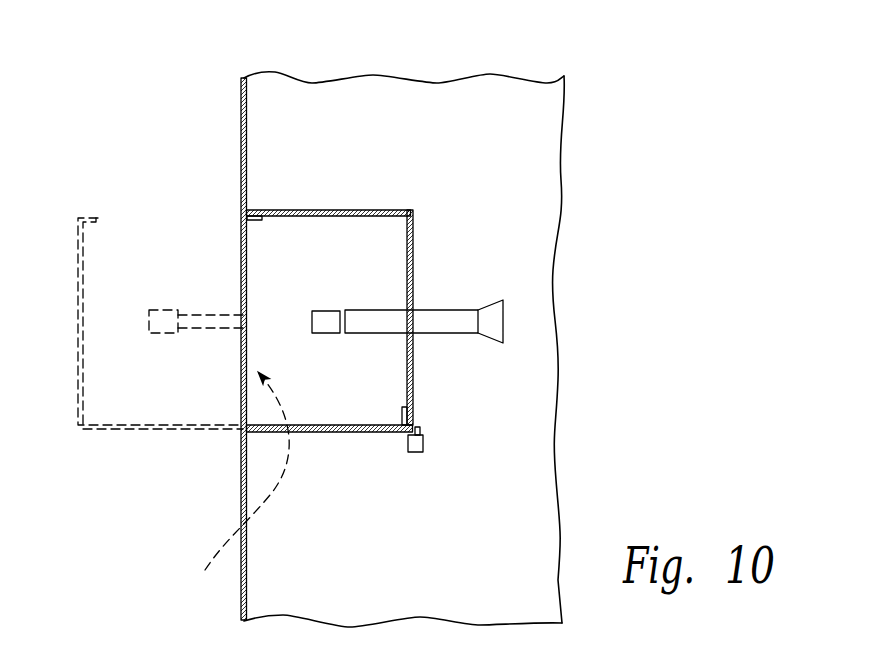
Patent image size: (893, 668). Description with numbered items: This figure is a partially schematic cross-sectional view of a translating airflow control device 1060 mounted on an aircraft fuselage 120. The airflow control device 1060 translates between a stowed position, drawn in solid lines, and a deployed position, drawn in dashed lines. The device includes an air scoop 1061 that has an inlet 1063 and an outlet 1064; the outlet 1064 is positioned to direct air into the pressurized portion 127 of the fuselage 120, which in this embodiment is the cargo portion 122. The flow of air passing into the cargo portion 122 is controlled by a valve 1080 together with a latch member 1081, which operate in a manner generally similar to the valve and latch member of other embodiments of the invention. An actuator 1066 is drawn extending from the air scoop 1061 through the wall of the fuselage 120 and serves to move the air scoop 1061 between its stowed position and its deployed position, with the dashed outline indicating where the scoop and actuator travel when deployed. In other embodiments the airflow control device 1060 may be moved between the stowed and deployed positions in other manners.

The aircraft fuselage 120 is at (241, 105).
The cargo portion 122 is at (545, 208).
The pressurized portion 127 is at (564, 127).
The airflow control device 1060 is at (205, 440).
The air scoop 1061 is at (243, 272).
The inlet 1063 is at (168, 208).
The outlet 1064 is at (448, 388).
The actuator 1066 is at (432, 309).
The valve 1080 is at (413, 243).
The latch member 1081 is at (435, 446).